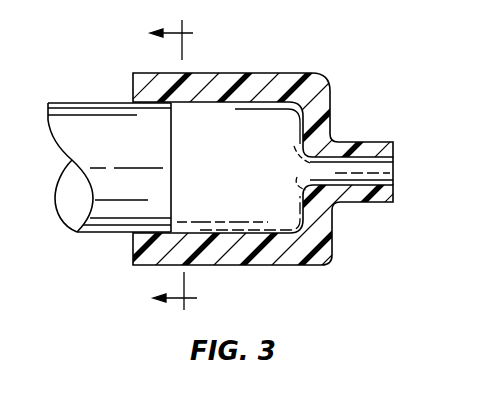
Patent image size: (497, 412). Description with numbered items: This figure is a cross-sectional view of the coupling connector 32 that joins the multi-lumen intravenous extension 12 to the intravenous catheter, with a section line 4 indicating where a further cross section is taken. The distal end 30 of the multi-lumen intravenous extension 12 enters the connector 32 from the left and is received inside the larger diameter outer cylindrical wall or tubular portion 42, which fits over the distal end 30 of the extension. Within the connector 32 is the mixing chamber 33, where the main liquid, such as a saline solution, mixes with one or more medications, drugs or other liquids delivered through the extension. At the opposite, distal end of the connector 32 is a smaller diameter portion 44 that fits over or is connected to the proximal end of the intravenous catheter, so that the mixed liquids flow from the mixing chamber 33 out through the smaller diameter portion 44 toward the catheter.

The section line 4 is at (184, 166).
The multi-lumen intravenous extension 12 is at (90, 233).
The distal end 30 is at (123, 107).
The coupling connector 32 is at (330, 88).
The mixing chamber 33 is at (280, 217).
The tubular portion 42 is at (257, 80).
The smaller diameter portion 44 is at (378, 140).